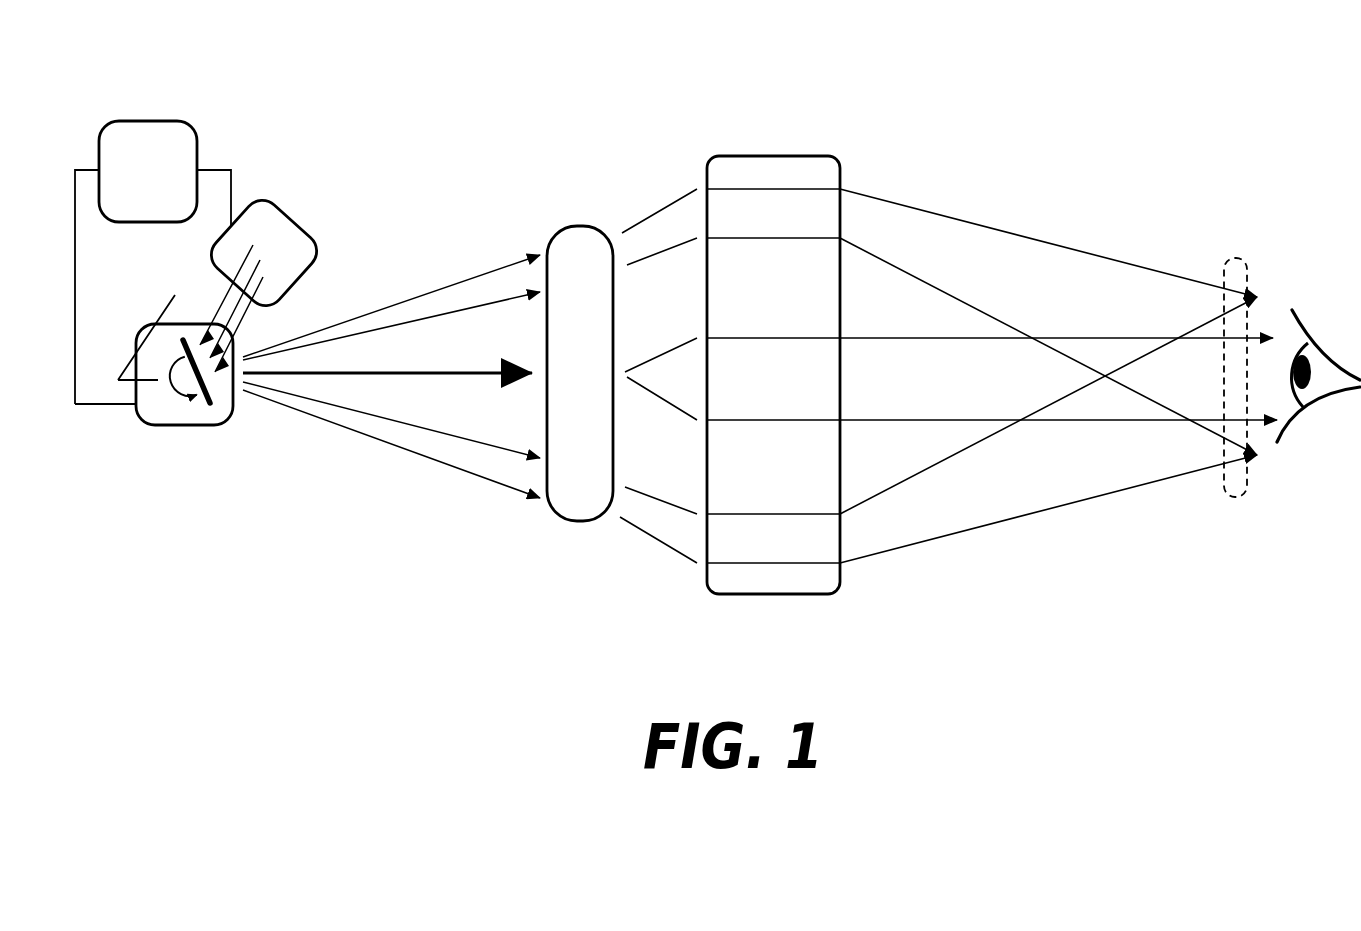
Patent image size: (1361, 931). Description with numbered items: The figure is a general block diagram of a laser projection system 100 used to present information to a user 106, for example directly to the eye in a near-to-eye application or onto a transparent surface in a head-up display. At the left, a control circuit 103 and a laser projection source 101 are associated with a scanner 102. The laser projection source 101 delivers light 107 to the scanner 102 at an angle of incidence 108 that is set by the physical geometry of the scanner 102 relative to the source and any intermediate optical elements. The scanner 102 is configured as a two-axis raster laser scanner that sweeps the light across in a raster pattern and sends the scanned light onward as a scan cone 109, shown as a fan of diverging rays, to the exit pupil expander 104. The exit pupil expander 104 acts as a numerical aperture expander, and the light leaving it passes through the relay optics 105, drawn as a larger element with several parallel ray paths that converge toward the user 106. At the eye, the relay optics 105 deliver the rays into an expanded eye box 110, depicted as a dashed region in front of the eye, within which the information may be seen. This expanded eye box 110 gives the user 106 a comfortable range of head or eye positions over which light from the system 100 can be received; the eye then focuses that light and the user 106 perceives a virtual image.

The system 100 is at (613, 113).
The laser projection source 101 is at (287, 212).
The scanner 102 is at (198, 425).
The control circuit 103 is at (178, 137).
The exit pupil expander 104 is at (580, 225).
The relay optics 105 is at (765, 156).
The user 106 is at (1323, 352).
The light 107 is at (237, 328).
The angle of incidence 108 is at (118, 380).
The scan cone 109 is at (395, 457).
The expanded eye box 110 is at (1233, 256).